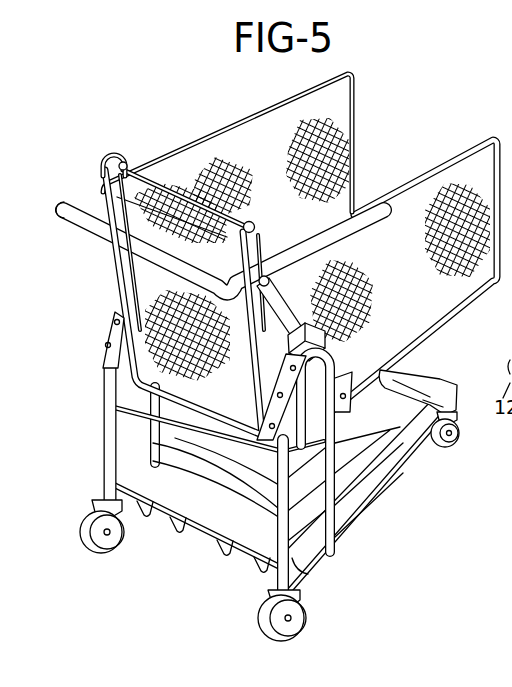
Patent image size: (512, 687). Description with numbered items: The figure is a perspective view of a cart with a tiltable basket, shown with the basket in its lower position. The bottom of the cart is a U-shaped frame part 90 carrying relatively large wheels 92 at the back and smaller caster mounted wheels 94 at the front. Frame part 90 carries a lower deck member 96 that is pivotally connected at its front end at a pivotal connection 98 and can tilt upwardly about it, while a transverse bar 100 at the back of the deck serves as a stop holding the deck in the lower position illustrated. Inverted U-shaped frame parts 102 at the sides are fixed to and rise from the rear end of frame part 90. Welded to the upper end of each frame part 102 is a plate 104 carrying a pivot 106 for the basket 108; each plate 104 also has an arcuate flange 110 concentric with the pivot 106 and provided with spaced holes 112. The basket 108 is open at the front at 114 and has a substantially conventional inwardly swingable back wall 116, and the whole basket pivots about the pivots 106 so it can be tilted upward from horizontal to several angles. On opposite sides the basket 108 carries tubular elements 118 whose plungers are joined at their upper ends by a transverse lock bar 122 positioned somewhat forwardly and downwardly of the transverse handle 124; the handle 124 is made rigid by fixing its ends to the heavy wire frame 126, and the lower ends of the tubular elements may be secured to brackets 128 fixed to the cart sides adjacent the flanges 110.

The "U" shaped frame part 90 is at (373, 512).
The wheels 92 is at (291, 633).
The caster mounted wheels 94 is at (450, 447).
The lower deck member 96 is at (200, 533).
The pivotal connection 98 is at (441, 386).
The transverse bar 100 is at (308, 565).
The inverted "U" shaped frame parts 102 is at (100, 443).
The plate 104 is at (221, 373).
The pivot 106 is at (344, 391).
The basket 108 is at (403, 271).
The flange 110 is at (113, 328).
The spaced holes 112 is at (278, 395).
The open front 114 is at (399, 111).
The inwardly swingable back wall 116 is at (160, 197).
The tubular elements 118 is at (287, 312).
The transverse lock bar 122 is at (142, 232).
The transverse handle 124 is at (82, 226).
The heavy wire frame 126 is at (221, 127).
The brackets 128 is at (366, 294).